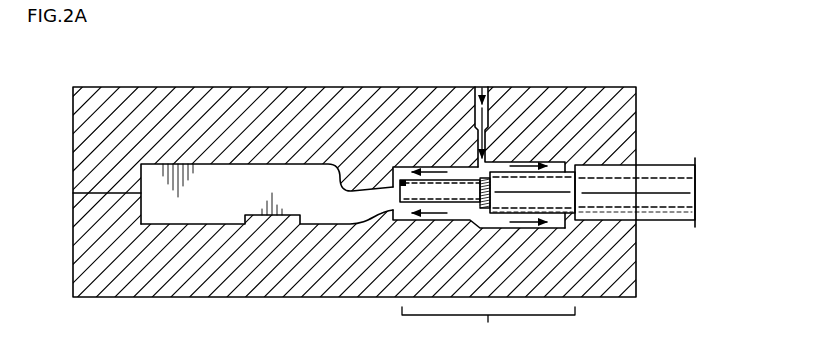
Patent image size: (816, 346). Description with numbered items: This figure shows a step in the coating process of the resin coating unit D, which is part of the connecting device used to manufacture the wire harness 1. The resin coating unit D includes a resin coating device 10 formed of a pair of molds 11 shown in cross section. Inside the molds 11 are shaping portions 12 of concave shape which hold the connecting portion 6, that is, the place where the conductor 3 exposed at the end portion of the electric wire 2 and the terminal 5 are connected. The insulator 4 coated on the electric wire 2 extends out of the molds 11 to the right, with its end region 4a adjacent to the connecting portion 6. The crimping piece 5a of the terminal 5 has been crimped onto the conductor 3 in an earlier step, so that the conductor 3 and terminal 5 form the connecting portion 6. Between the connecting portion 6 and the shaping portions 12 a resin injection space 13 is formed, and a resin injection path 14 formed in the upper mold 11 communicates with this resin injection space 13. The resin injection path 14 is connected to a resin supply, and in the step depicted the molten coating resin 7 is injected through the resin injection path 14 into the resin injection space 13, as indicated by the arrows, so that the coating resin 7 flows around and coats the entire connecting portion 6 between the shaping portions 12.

The wire harness 1 is at (135, 182).
The electric wire 2 is at (678, 164).
The conductor 3 is at (490, 174).
The insulator 4 is at (648, 164).
The cable sleeve end 4a is at (556, 171).
The terminal 5 is at (138, 211).
The crimping piece 5a is at (455, 180).
The connecting portion 6 is at (488, 325).
The coating resin 7 is at (482, 86).
The resin coating device 10 is at (178, 86).
The mold 11 is at (113, 108).
The shaping portion 12 is at (394, 166).
The resin injection space 13 is at (566, 220).
The resin injection path 14 is at (486, 128).
The resin coating unit D is at (612, 80).